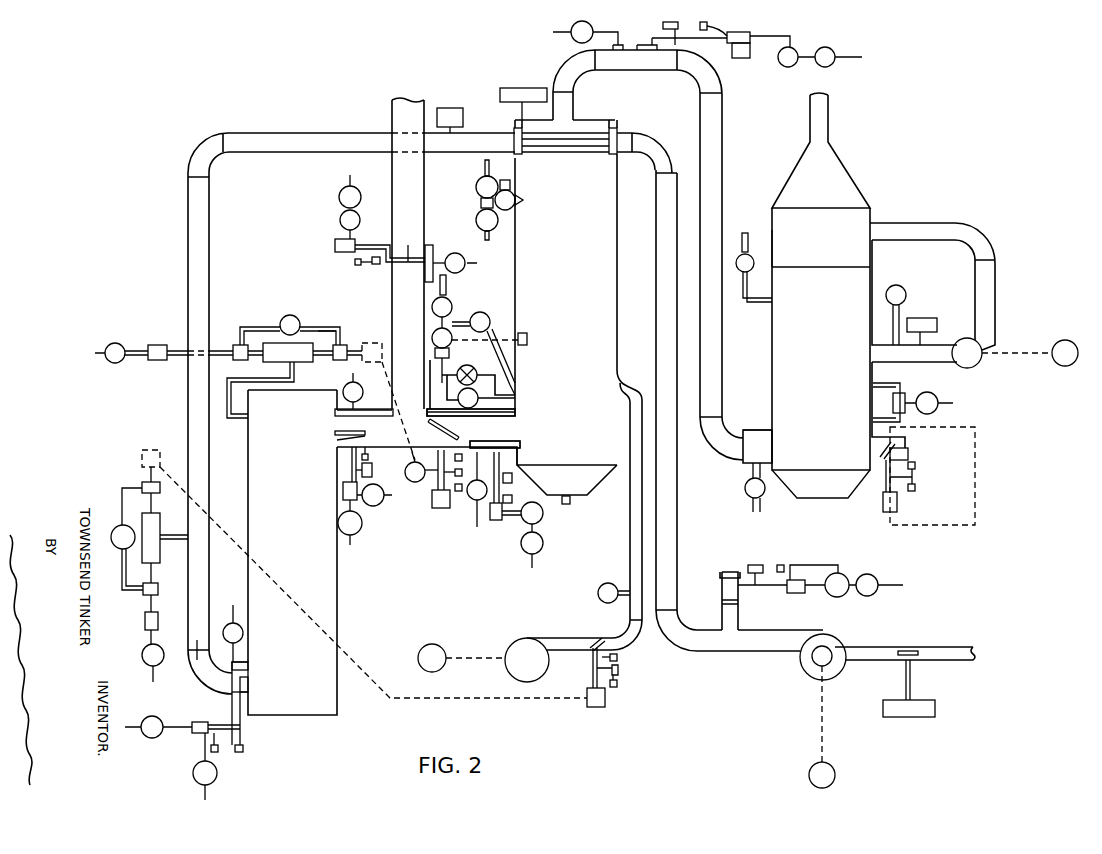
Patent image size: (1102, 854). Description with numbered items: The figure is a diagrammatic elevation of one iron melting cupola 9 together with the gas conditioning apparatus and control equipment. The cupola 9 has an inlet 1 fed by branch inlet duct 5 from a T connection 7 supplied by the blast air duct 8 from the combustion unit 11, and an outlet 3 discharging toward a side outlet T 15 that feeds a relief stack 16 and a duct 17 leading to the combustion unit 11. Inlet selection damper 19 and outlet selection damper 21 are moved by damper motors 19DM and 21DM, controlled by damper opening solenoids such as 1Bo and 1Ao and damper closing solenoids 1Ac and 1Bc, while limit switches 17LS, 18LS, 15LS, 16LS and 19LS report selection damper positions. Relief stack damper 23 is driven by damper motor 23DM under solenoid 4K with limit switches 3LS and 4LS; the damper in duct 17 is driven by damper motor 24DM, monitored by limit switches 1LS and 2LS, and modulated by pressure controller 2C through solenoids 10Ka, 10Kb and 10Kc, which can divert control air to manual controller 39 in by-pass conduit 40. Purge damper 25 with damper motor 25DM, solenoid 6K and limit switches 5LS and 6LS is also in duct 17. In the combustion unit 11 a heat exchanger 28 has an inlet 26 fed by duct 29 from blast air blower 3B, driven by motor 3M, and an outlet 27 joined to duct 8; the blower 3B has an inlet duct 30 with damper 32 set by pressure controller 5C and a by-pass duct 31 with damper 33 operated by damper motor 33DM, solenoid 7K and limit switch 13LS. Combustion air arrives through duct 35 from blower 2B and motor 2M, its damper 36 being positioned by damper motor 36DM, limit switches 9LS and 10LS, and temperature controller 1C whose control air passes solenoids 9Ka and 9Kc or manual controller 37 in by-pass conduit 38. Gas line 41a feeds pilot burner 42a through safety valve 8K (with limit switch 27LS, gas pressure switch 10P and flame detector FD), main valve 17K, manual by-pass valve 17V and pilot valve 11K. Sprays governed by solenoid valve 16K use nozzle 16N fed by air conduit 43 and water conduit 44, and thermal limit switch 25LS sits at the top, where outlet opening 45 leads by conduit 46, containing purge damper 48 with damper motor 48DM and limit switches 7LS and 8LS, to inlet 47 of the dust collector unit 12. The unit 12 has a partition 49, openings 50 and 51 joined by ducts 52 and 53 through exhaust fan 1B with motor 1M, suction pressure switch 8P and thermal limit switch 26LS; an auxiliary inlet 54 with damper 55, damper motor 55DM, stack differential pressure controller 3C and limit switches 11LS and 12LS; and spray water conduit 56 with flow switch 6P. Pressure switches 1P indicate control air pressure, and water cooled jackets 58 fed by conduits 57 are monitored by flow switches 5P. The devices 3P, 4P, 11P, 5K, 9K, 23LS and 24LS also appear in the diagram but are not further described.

The cupola inlet 1 is at (250, 672).
The exhaust fan 1B is at (984, 362).
The fan motor 1M is at (1068, 340).
The pressure switch 1P is at (115, 343).
The temperature controller 1C is at (160, 532).
The damper opening solenoid 1Ao is at (378, 505).
The damper closing solenoid 1Ac is at (355, 533).
The damper opening solenoid 1Bo is at (152, 738).
The damper closing solenoid 1Bc is at (217, 773).
The limit switch 1LS is at (462, 455).
The pressure controller 2C is at (270, 380).
The combustion air blower 2B is at (527, 642).
The blower motor 2M is at (432, 644).
The limit switch 2LS is at (461, 492).
The cupola outlet 3 is at (335, 433).
The blast air blower 3B is at (803, 670).
The blower motor 3M is at (835, 772).
The stack differential pressure controller 3C is at (893, 400).
The pressure switch 3P is at (476, 188).
The limit switch 3LS is at (355, 262).
The solenoid 4K is at (340, 220).
The pressure switch 4P is at (478, 218).
The limit switch 4LS is at (376, 265).
The branch inlet duct 5 is at (218, 684).
The pressure operated controller 5C is at (920, 703).
The relay 5K is at (788, 67).
The flow switch 5P is at (243, 630).
The limit switch 5LS is at (512, 499).
The solenoid 6K is at (543, 513).
The flow responsive switch 6P is at (750, 258).
The limit switch 6LS is at (512, 478).
The T connection 7 is at (203, 660).
The solenoid 7K is at (838, 597).
The limit switch 7LS is at (712, 31).
The blast air duct 8 is at (307, 152).
The solenoid valve 8K is at (449, 346).
The suction pressure switch 8P is at (912, 283).
The limit switch 8LS is at (663, 26).
The iron melting cupola 9 is at (337, 595).
The relay 9K is at (158, 590).
The solenoid 9Ka is at (145, 622).
The three-way solenoid 9Kc is at (142, 488).
The limit switch 9LS is at (617, 657).
The gas pressure responsive switch 10P is at (452, 307).
The shut-off solenoid 10Ka is at (158, 345).
The three-way valve solenoid 10Kb is at (238, 345).
The three-way valve solenoid 10Kc is at (340, 362).
The limit switch 10LS is at (617, 683).
The combustion unit 11 is at (618, 270).
The solenoid valve 11K is at (481, 312).
The pressure switch 11P is at (598, 593).
The limit switch 11LS is at (915, 487).
The dust collector unit 12 is at (826, 334).
The limit switch 12LS is at (915, 465).
The limit switch 13LS is at (781, 565).
The side outlet T 15 is at (393, 404).
The limit switch 15LS is at (372, 477).
The relief stack 16 is at (415, 200).
The solenoid valve 16K is at (513, 206).
The spray nozzle 16N is at (523, 198).
The limit switch 16LS is at (368, 455).
The duct 17 is at (514, 436).
The main solenoid valve 17K is at (478, 401).
The manually operated valve 17V is at (457, 375).
The limit switch 17LS is at (243, 748).
The limit switch 18LS is at (218, 746).
The inlet selection damper 19 is at (250, 686).
The damper motor 19DM is at (192, 722).
The limit switch 19LS is at (765, 555).
The outlet selection damper 21 is at (337, 441).
The damper motor 21DM is at (343, 492).
The relief stack damper 23 is at (409, 265).
The damper motor 23DM is at (335, 245).
The limit switch 23LS is at (470, 102).
The damper motor 24DM is at (342, 322).
The limit switch 24LS is at (511, 187).
The purge damper 25 is at (520, 447).
The damper motor 25DM is at (496, 522).
The thermal limit switch 25LS is at (540, 90).
The heat exchanger inlet 26 is at (614, 156).
The thermal limit switch 26LS is at (922, 318).
The heat exchanger outlet 27 is at (513, 130).
The limit switch 27LS is at (435, 352).
The heat exchanger 28 is at (572, 156).
The duct 29 is at (660, 334).
The inlet duct 30 is at (946, 647).
The by-pass duct 31 is at (722, 586).
The damper 32 is at (908, 650).
The by-pass damper 33 is at (742, 603).
The damper motor 33DM is at (797, 593).
The combustion air duct 35 is at (633, 578).
The damper 36 is at (596, 640).
The damper motor 36DM is at (142, 458).
The manual controller 37 is at (111, 537).
The by-pass control air conduit 38 is at (122, 577).
The manual controller 39 is at (612, 372).
The by-pass conduit 40 is at (262, 327).
The gas line 41a is at (446, 286).
The pilot burner 42a is at (512, 388).
The spray air conduit 43 is at (484, 163).
The spray water conduit 44 is at (484, 237).
The outlet opening 45 is at (578, 121).
The conduit 46 is at (652, 72).
The dust unit inlet 47 is at (774, 442).
The purge damper 48 is at (642, 51).
The damper motor 48DM is at (738, 58).
The partition 49 is at (808, 268).
The outlet opening 50 is at (872, 345).
The inlet opening 51 is at (870, 226).
The duct 52 is at (912, 362).
The duct 53 is at (926, 223).
The auxiliary inlet 54 is at (872, 437).
The control damper 55 is at (908, 455).
The damper motor 55DM is at (897, 502).
The spray water conduit 56 is at (746, 233).
The cooling water conduit 57 is at (233, 607).
The water cooled jacket 58 is at (248, 664).
The flame detector FD is at (523, 333).